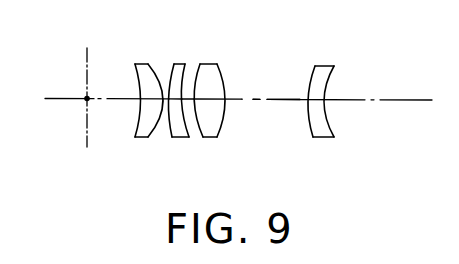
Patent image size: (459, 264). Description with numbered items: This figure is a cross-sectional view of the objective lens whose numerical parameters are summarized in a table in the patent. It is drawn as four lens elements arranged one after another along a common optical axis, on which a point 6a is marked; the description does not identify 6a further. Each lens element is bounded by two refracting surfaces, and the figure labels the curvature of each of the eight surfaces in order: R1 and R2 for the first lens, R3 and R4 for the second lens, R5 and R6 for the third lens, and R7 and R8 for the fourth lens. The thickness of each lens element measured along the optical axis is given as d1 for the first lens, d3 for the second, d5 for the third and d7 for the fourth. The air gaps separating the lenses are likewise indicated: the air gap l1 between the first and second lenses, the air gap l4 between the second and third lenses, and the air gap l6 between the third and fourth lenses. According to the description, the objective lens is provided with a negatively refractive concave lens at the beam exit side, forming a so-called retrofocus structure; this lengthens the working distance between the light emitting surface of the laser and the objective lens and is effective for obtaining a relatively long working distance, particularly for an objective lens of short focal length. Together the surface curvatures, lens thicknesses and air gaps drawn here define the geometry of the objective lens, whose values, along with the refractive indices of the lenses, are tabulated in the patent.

The optical axis reference point 6a is at (85, 100).
The lens thickness d1 is at (132, 131).
The lens thickness d3 is at (187, 113).
The lens thickness d5 is at (235, 119).
The lens thickness d7 is at (334, 120).
The air gap l1 is at (165, 68).
The air gap l4 is at (196, 72).
The air gap l6 is at (265, 97).
The curvature of the first surface R1 is at (134, 135).
The curvature of the second surface R2 is at (127, 84).
The curvature of the third surface R3 is at (170, 127).
The curvature of the fourth surface R4 is at (191, 136).
The curvature of the fifth surface R5 is at (212, 135).
The curvature of the sixth surface R6 is at (226, 119).
The curvature of the seventh surface R7 is at (324, 131).
The curvature of the eighth surface R8 is at (335, 122).